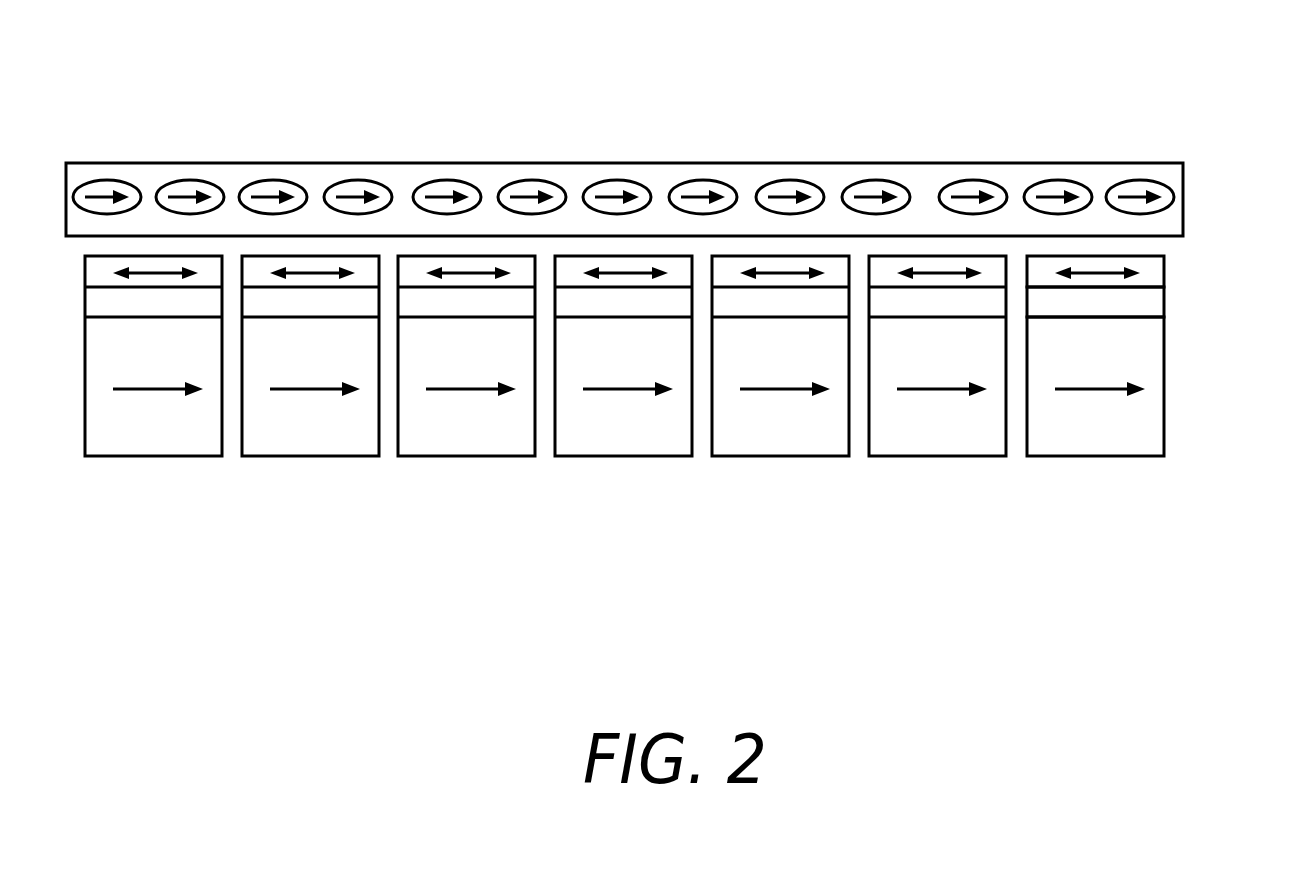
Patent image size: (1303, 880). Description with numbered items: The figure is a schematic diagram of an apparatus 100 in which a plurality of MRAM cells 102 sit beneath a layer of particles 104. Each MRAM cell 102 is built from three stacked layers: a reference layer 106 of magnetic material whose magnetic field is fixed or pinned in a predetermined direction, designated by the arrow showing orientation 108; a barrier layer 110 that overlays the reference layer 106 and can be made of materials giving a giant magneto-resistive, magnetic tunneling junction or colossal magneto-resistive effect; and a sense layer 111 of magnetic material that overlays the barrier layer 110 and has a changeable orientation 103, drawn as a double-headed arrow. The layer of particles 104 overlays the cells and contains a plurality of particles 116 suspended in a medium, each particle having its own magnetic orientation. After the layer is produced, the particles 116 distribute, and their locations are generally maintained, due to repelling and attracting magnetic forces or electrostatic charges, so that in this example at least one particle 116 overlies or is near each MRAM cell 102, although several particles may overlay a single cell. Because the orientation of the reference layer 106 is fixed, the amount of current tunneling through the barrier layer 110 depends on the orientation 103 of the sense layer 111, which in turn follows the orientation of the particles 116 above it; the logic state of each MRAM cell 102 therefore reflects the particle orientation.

The apparatus 100 is at (640, 101).
The MRAM cell 102 is at (945, 457).
The orientation of the sense layer 103 is at (1143, 270).
The layer of particles 104 is at (907, 162).
The reference layer 106 is at (1166, 405).
The orientation of the reference layer 108 is at (1092, 387).
The barrier layer 110 is at (1166, 307).
The sense layer 111 is at (1164, 273).
The particles 116 is at (1033, 180).